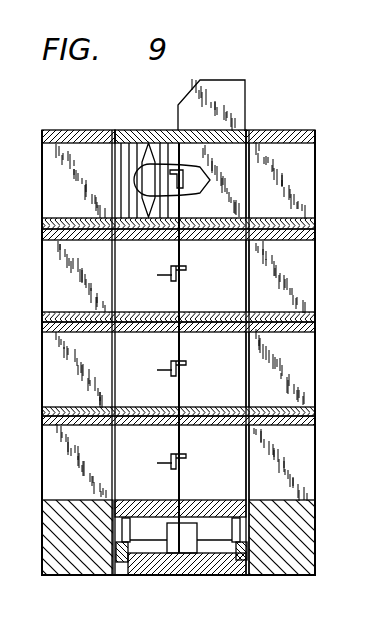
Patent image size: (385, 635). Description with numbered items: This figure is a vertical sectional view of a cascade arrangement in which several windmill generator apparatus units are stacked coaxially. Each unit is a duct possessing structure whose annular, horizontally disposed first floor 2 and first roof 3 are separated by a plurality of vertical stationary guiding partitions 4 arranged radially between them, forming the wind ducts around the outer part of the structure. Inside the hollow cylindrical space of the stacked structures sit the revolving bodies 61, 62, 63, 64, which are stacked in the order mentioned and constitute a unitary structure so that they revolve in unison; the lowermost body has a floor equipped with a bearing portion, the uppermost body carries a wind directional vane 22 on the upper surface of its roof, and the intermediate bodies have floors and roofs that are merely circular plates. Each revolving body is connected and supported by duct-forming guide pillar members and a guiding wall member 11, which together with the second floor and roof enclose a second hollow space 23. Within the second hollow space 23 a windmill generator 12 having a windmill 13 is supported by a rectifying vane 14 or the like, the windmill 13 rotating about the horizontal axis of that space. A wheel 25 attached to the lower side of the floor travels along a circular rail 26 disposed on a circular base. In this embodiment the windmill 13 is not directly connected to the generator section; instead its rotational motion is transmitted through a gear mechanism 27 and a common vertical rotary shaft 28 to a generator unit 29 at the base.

The first floor 2 is at (316, 220).
The first roof 3 is at (316, 134).
The vertical stationary guiding partitions 4 is at (308, 187).
The guiding wall member 11 is at (43, 447).
The windmill generator 12 is at (43, 352).
The windmill 13 is at (43, 254).
The rectifying vane 14 is at (43, 158).
The wind directional vane 22 is at (235, 93).
The second hollow space 23 is at (118, 198).
The wheel 25 is at (130, 530).
The circular rail 26 is at (124, 562).
The gear mechanism 27 is at (186, 196).
The common vertical rotary shaft 28 is at (185, 377).
The generator unit 29 is at (178, 537).
The lowermost revolving body 61 is at (250, 447).
The intermediate revolving body 62 is at (250, 350).
The intermediate revolving body 63 is at (250, 258).
The uppermost revolving body 64 is at (250, 163).